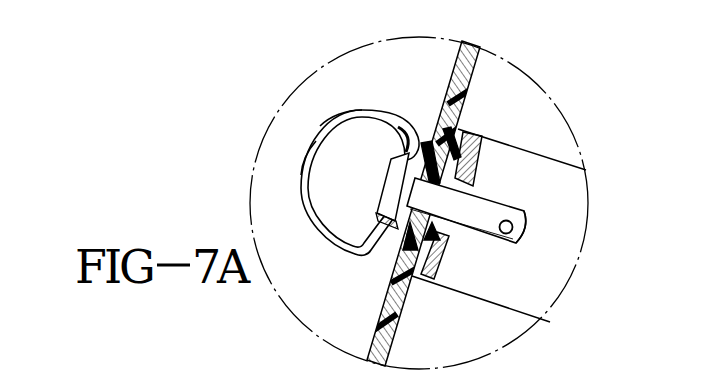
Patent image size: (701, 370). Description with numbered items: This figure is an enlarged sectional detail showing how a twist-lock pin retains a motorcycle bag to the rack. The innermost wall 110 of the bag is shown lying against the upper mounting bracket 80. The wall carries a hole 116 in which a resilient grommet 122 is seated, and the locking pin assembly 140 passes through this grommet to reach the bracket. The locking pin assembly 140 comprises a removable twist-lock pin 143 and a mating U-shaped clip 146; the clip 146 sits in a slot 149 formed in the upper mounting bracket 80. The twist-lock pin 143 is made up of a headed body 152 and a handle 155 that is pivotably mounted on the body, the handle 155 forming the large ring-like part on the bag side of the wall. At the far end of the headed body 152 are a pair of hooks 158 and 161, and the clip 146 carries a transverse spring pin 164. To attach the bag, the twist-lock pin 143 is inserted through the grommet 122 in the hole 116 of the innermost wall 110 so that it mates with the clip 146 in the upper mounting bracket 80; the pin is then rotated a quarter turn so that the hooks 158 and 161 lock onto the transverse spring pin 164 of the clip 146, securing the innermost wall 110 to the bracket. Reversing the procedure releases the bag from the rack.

The upper mounting bracket 80 is at (519, 152).
The innermost wall 110 is at (392, 293).
The hole 116 is at (377, 212).
The resilient grommet 122 is at (417, 163).
The locking pin assembly 140 is at (355, 104).
The twist-lock pin 143 is at (315, 140).
The U-shaped clip 146 is at (473, 254).
The slot 149 is at (464, 190).
The headed body 152 is at (388, 190).
The handle 155 is at (340, 121).
The hook 158 is at (517, 242).
The hook 161 is at (529, 211).
The transverse spring pin 164 is at (524, 219).